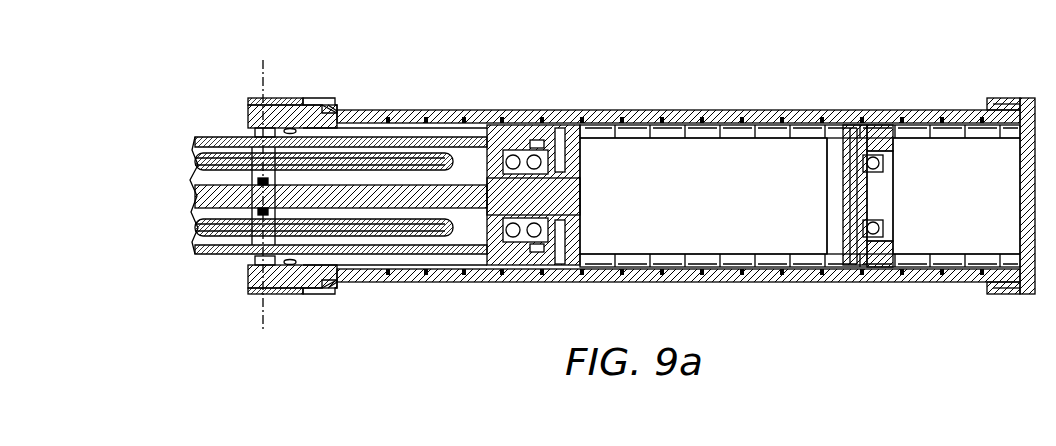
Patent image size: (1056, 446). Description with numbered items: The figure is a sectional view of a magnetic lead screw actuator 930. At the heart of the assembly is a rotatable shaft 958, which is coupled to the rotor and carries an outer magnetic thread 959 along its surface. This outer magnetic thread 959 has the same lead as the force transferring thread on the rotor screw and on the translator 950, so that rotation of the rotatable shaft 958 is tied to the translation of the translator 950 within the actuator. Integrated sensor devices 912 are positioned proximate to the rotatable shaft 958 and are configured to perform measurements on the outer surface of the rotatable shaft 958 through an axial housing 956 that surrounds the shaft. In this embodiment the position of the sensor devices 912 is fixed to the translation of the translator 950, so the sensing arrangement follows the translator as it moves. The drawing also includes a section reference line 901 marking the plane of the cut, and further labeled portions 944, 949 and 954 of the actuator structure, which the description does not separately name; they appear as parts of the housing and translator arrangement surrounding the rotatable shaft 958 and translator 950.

The section reference line 901 is at (254, 75).
The sensor devices 912 is at (252, 203).
The MLS actuator 930 is at (366, 64).
The housing tube 944 is at (583, 104).
The piston 949 is at (790, 158).
The translator 950 is at (732, 103).
The liner sleeve 954 is at (622, 117).
The axial housing 956 is at (210, 262).
The rotatable shaft 958 is at (325, 200).
The outer magnetic thread 959 is at (218, 212).